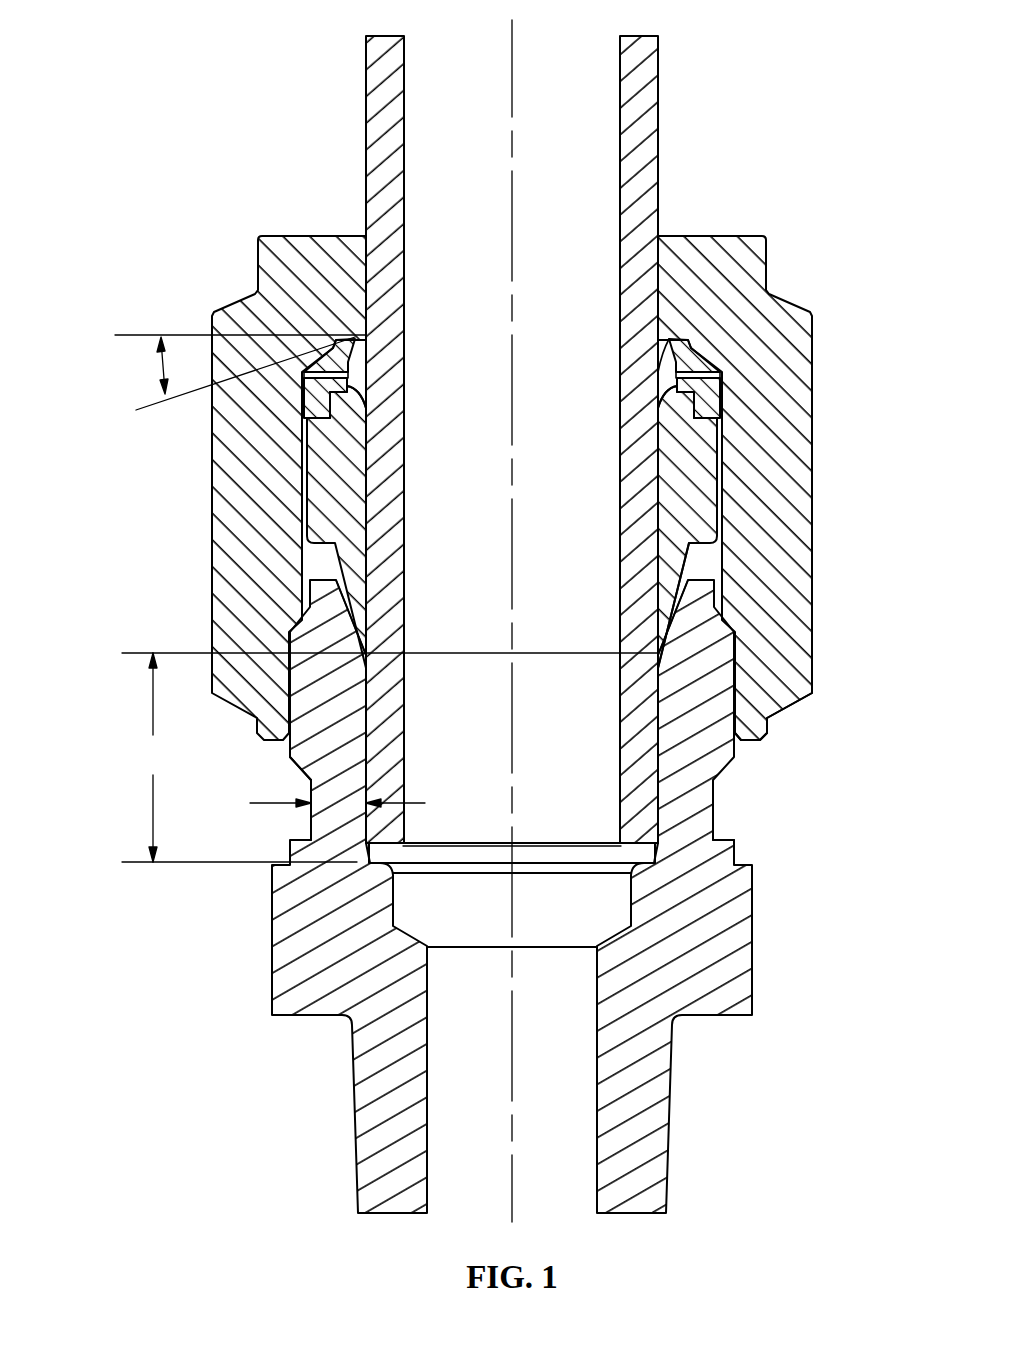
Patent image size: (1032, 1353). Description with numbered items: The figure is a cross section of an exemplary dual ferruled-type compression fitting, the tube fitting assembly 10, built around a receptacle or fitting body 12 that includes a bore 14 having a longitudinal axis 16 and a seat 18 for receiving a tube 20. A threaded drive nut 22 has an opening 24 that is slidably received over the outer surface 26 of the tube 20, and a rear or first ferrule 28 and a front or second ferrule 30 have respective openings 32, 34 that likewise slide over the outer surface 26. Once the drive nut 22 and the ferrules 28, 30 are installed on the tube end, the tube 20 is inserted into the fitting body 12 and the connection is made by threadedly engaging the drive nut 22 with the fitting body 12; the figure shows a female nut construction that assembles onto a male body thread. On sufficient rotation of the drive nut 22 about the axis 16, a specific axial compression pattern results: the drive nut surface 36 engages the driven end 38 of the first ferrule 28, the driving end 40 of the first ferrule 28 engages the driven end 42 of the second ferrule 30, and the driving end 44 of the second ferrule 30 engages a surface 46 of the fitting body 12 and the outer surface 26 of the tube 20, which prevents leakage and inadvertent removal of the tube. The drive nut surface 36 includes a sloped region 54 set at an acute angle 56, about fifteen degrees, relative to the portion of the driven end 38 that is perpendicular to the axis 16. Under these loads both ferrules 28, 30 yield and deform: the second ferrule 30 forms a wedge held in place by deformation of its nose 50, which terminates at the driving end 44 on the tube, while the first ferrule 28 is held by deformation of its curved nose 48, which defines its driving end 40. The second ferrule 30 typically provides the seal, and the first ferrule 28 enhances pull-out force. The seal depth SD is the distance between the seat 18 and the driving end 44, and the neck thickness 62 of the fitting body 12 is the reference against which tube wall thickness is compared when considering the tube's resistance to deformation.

The tube fitting assembly 10 is at (760, 102).
The fitting body 12 is at (733, 765).
The bore 14 is at (290, 757).
The longitudinal axis 16 is at (515, 1130).
The seat 18 is at (660, 830).
The tube 20 is at (660, 804).
The drive nut 22 is at (770, 250).
The opening 24 is at (368, 280).
The outer surface 26 is at (700, 512).
The first ferrule 28 is at (702, 375).
The second ferrule 30 is at (706, 468).
The opening 32 is at (355, 332).
The opening 34 is at (350, 440).
The drive nut surface 36 is at (660, 346).
The driven end 38 is at (130, 335).
The driving end 40 is at (706, 410).
The driven end 42 is at (705, 385).
The driving end 44 is at (748, 700).
The surface 46 is at (700, 560).
The nose 48 is at (346, 425).
The nose 50 is at (705, 672).
The sloped region 54 is at (340, 372).
The acute angle 56 is at (158, 368).
The neck thickness 62 is at (337, 800).